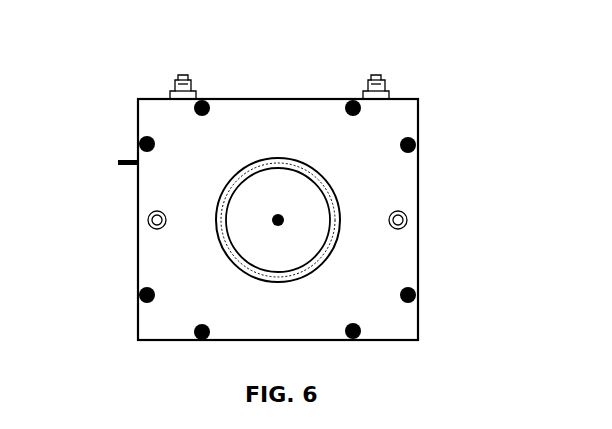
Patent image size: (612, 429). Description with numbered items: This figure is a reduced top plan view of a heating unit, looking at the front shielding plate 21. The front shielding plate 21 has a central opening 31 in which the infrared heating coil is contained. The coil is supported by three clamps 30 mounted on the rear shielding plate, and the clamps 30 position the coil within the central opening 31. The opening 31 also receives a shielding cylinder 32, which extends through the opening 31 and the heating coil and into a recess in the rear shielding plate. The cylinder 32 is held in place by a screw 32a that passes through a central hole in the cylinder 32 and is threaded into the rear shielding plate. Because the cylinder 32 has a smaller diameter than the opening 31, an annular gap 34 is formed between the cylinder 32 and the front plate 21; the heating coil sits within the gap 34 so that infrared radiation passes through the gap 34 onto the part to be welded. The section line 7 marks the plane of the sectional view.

The front shielding plate 21 is at (412, 263).
The clamp 30 is at (383, 75).
The central opening 31 is at (218, 232).
The shielding cylinder 32 is at (291, 190).
The screw 32a is at (278, 215).
The annular gap 34 is at (338, 193).
The section line 7- 7 is at (48, 220).